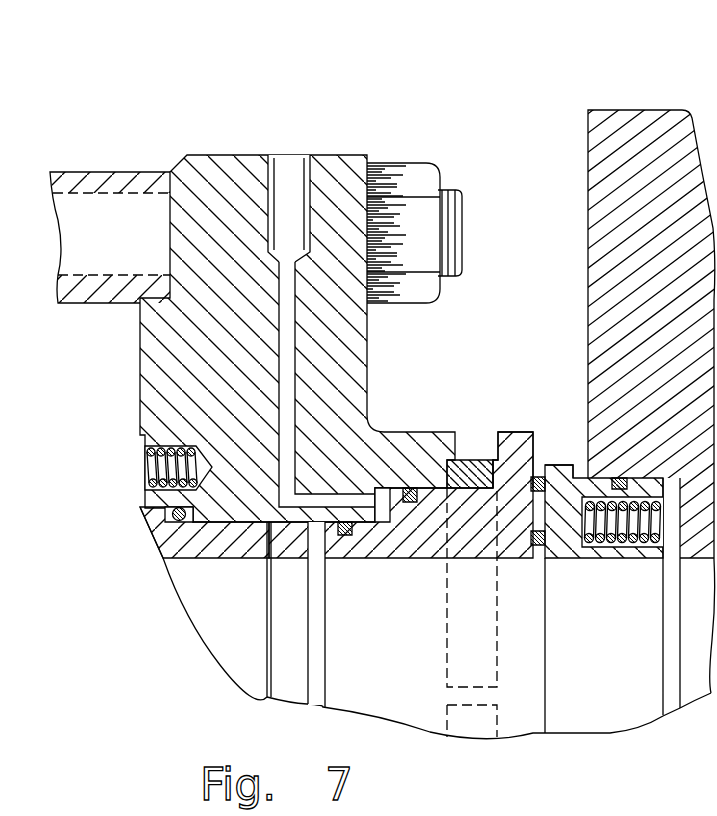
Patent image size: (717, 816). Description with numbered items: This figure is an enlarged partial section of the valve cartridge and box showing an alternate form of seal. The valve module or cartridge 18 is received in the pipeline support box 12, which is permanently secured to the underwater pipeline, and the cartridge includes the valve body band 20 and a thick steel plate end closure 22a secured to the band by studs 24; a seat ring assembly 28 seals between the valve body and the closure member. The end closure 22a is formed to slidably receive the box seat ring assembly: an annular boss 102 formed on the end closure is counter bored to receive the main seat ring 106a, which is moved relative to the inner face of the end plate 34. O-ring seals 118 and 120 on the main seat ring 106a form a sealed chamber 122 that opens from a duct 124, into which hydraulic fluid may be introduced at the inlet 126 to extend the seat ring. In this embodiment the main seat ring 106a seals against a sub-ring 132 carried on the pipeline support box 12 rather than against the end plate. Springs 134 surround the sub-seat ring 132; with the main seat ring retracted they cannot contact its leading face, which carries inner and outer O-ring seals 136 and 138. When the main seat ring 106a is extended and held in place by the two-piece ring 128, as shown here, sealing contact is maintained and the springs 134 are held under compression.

The pipeline support box 12 is at (662, 95).
The valve module or cartridge 18 is at (403, 140).
The valve body band 20 is at (78, 178).
The end closure 22a is at (213, 160).
The studs 24 is at (447, 193).
The seat ring assembly 28 is at (228, 548).
The end plate 34 is at (627, 117).
The annular boss 102 is at (427, 432).
The main seat ring 106a is at (408, 547).
The O-ring seal 118 is at (412, 486).
The O-ring seal 120 is at (316, 550).
The sealed chamber 122 is at (383, 512).
The duct 124 is at (288, 352).
The hydraulic fluid inlet 126 is at (273, 172).
The two-piece ring 128 is at (470, 460).
The sub-ring 132 is at (562, 546).
The springs 134 is at (540, 476).
The inner O-ring seal 136 is at (537, 546).
The outer O-ring seal 138 is at (548, 464).